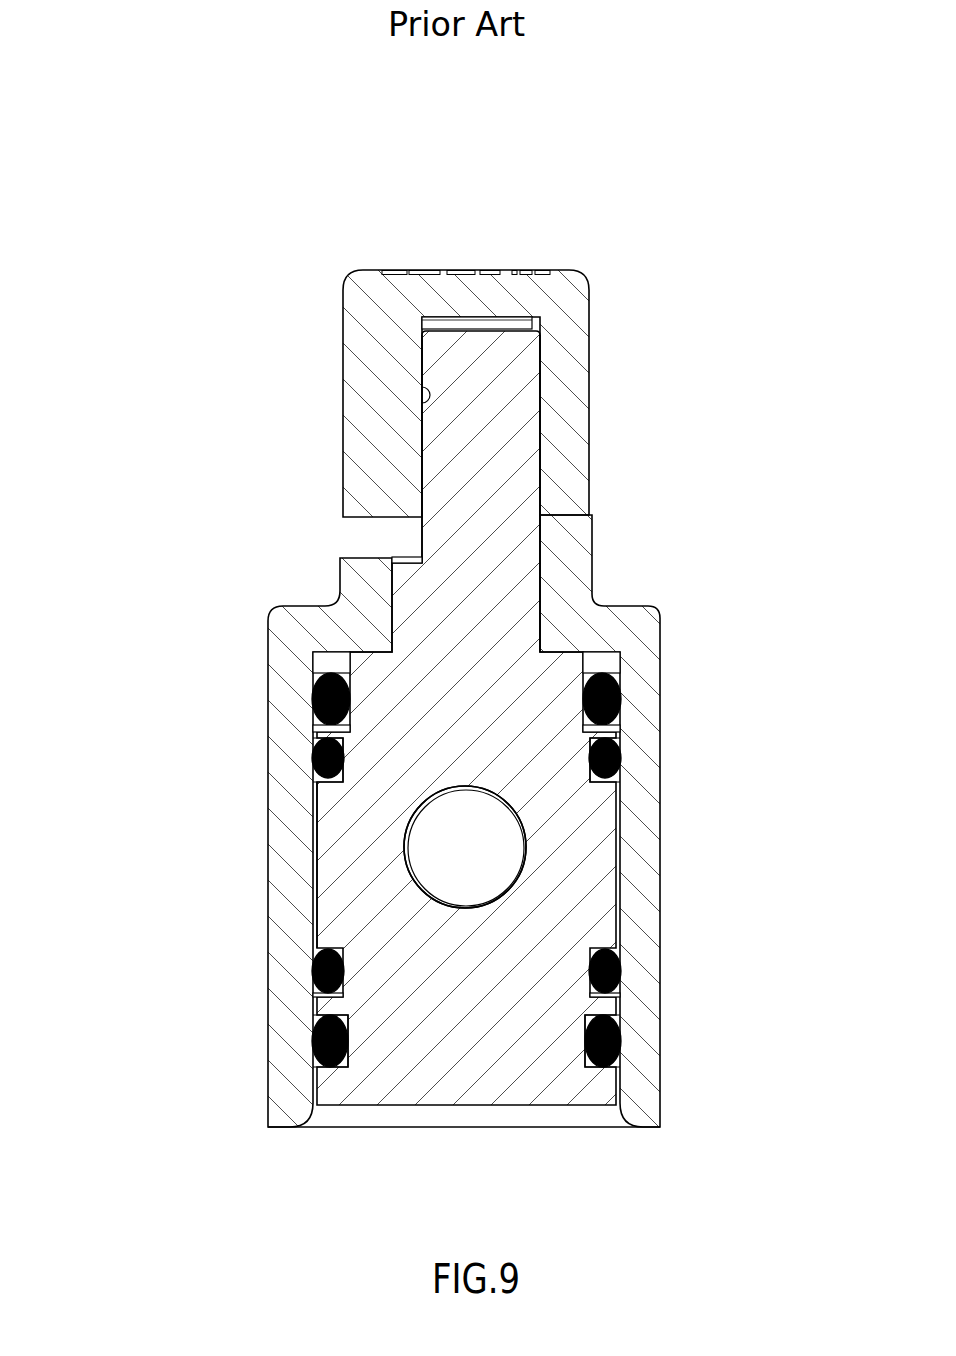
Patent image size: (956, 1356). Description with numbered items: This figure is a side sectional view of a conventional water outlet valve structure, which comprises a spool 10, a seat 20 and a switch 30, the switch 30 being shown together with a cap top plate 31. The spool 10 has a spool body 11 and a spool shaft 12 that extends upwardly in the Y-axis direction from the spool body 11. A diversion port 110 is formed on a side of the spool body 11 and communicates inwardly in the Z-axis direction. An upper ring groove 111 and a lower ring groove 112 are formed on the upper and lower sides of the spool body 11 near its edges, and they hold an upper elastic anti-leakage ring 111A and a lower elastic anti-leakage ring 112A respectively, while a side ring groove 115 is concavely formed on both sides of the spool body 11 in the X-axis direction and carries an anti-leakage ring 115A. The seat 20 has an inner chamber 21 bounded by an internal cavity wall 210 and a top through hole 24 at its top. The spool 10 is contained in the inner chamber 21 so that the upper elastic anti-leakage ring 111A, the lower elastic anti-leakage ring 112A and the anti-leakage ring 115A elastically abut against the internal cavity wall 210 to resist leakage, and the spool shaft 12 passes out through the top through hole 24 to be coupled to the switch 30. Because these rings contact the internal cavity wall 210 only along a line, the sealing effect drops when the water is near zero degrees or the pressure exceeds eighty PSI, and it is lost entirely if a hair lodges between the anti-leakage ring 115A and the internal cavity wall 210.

The switch 30 is at (490, 247).
The cap top plate 31 is at (408, 305).
The spool shaft 12 is at (430, 448).
The top through hole 24 is at (412, 560).
The seat 20 is at (528, 902).
The spool body 11 is at (578, 650).
The upper ring groove 111 is at (313, 657).
The upper elastic anti-leakage ring 111A is at (312, 697).
The side ring groove 115 is at (312, 753).
The anti-leakage ring 115A is at (327, 777).
The diversion port 110 is at (503, 845).
The internal cavity wall 210 is at (317, 877).
The inner chamber 21 is at (394, 791).
The lower ring groove 112 is at (585, 1067).
The lower elastic anti-leakage ring 112A is at (662, 1118).
The spool 10 is at (343, 1108).